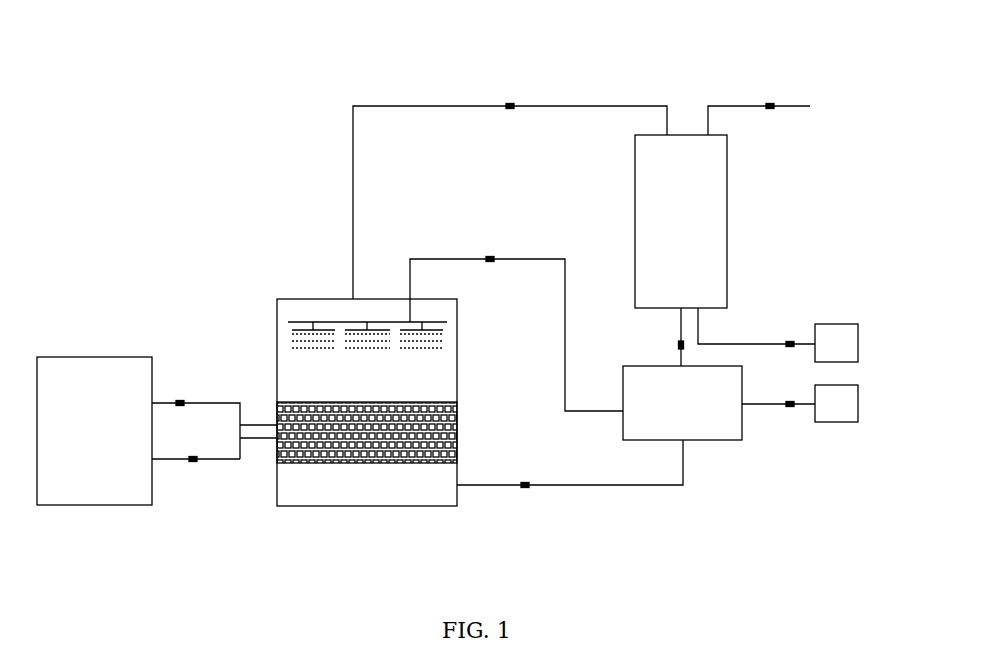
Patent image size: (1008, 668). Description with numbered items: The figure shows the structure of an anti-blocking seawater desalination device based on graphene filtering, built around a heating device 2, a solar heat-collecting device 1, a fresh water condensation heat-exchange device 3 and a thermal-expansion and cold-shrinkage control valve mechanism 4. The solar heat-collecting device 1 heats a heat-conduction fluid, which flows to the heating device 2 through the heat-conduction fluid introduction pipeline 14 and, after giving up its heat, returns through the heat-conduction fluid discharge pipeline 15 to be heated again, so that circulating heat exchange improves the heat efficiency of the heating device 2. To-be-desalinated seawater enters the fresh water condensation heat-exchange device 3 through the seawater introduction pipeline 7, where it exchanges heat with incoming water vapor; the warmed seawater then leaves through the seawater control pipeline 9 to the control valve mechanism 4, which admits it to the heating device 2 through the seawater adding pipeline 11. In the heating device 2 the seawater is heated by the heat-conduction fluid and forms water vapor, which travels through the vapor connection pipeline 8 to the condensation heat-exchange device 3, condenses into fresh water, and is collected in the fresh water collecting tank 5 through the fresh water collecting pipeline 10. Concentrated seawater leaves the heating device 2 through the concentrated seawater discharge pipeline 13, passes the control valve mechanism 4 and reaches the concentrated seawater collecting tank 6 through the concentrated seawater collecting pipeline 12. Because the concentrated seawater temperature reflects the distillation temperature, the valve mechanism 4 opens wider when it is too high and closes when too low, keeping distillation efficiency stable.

The solar heat-collecting device 1 is at (97, 377).
The heating device 2 is at (298, 310).
The fresh water condensation heat-exchange device 3 is at (715, 240).
The thermal-expansion and cold-shrinkage control valve mechanism 4 is at (717, 433).
The fresh water collecting tank 5 is at (833, 330).
The concentrated seawater collecting tank 6 is at (833, 403).
The seawater introduction pipeline 7 is at (790, 106).
The vapor connection pipeline 8 is at (404, 106).
The seawater control pipeline 9 is at (678, 340).
The fresh water collecting pipeline 10 is at (750, 344).
The seawater adding pipeline 11 is at (442, 259).
The concentrated seawater collecting pipeline 12 is at (773, 404).
The concentrated seawater discharge pipeline 13 is at (570, 485).
The heat-conduction fluid introduction pipeline 14 is at (213, 459).
The heat-conduction fluid discharge pipeline 15 is at (205, 403).